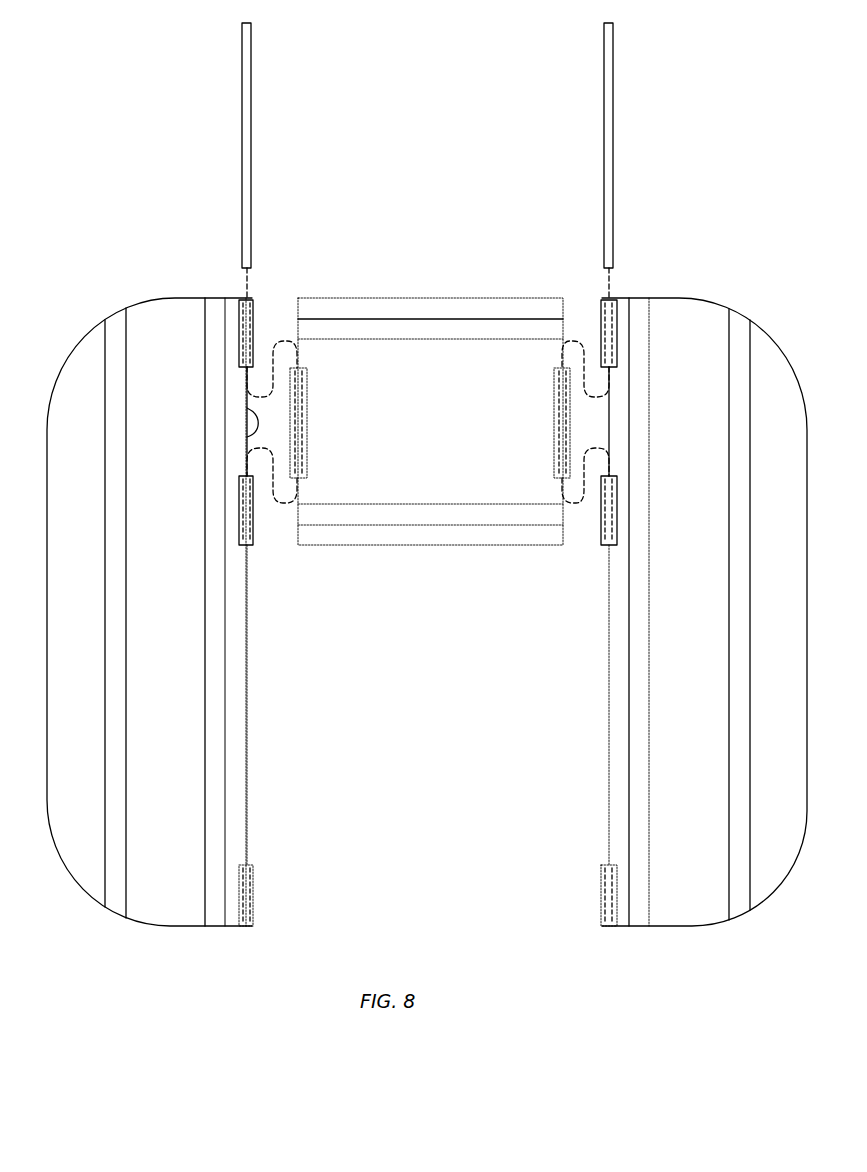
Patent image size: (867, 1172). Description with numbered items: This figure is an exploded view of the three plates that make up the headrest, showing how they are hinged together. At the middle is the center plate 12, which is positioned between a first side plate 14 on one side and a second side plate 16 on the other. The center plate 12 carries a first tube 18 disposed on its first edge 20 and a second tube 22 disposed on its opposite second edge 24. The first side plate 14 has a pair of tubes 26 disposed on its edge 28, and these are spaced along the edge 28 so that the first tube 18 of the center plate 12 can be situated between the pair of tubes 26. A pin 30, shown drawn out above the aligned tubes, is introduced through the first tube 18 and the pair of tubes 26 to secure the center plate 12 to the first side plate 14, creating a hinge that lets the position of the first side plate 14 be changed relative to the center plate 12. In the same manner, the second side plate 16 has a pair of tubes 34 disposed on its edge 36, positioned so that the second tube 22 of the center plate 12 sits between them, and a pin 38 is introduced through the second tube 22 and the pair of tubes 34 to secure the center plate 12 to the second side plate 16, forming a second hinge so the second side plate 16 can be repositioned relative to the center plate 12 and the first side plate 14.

The center plate 12 is at (468, 319).
The first side plate 14 is at (192, 320).
The second side plate 16 is at (672, 776).
The first tube 18 is at (306, 418).
The first edge 20 is at (298, 513).
The second tube 22 is at (553, 410).
The second edge 24 is at (563, 525).
The pair of tubes 26 is at (240, 343).
The edge 28 is at (258, 428).
The pin 30 is at (243, 93).
The pair of tubes 34 is at (612, 507).
The edge 36 is at (612, 722).
The pin 38 is at (605, 93).